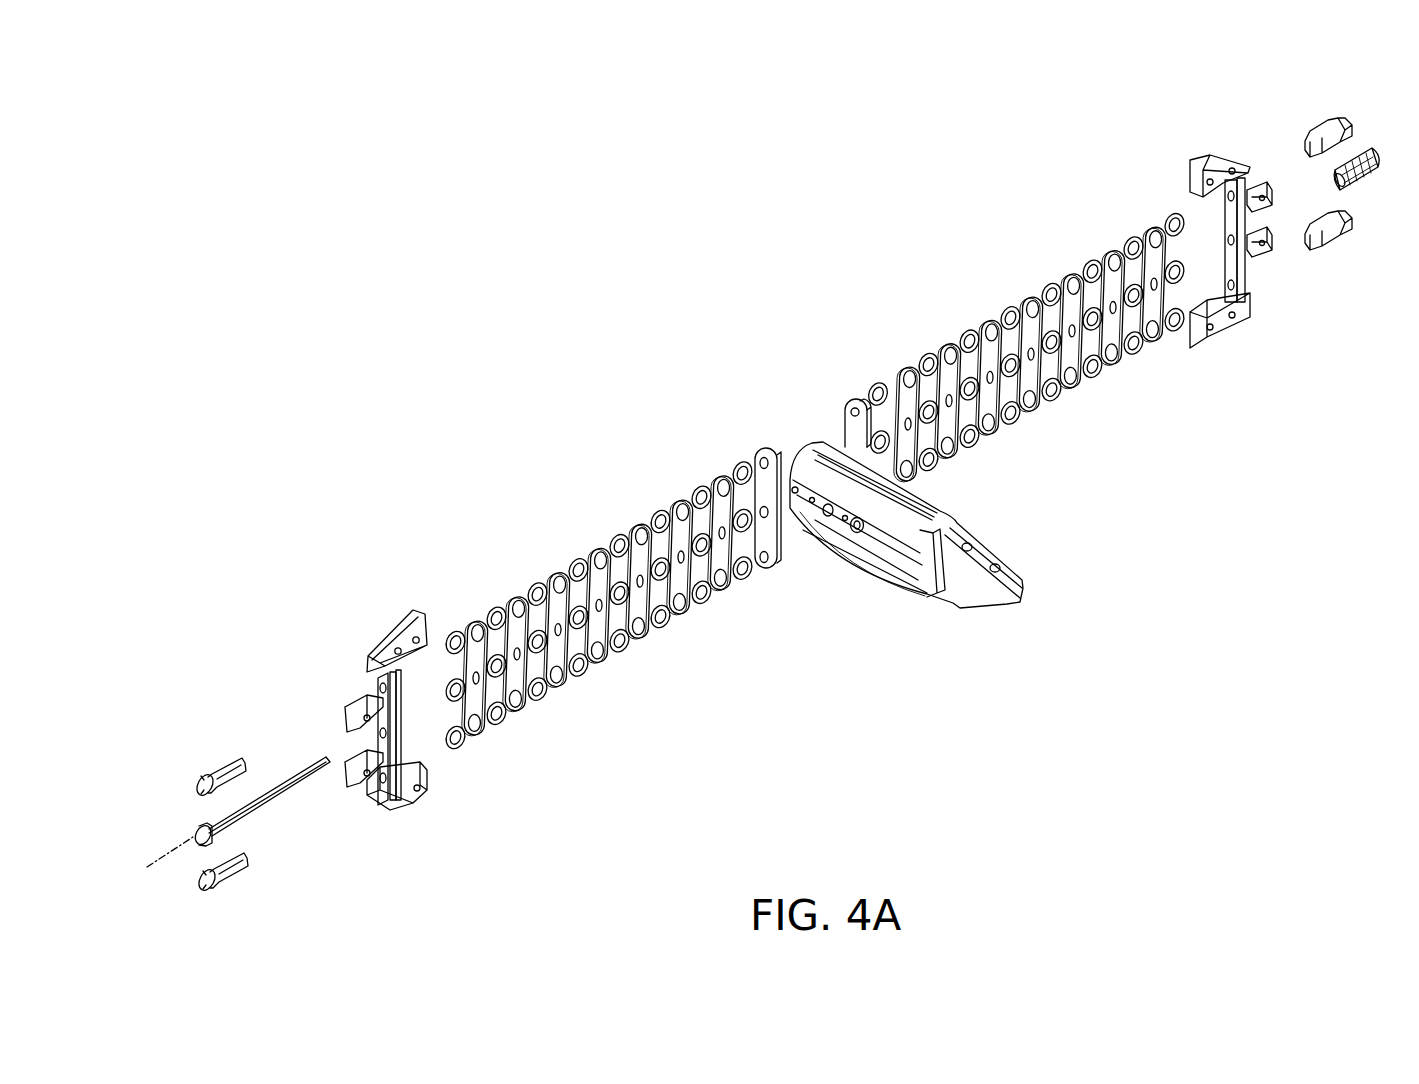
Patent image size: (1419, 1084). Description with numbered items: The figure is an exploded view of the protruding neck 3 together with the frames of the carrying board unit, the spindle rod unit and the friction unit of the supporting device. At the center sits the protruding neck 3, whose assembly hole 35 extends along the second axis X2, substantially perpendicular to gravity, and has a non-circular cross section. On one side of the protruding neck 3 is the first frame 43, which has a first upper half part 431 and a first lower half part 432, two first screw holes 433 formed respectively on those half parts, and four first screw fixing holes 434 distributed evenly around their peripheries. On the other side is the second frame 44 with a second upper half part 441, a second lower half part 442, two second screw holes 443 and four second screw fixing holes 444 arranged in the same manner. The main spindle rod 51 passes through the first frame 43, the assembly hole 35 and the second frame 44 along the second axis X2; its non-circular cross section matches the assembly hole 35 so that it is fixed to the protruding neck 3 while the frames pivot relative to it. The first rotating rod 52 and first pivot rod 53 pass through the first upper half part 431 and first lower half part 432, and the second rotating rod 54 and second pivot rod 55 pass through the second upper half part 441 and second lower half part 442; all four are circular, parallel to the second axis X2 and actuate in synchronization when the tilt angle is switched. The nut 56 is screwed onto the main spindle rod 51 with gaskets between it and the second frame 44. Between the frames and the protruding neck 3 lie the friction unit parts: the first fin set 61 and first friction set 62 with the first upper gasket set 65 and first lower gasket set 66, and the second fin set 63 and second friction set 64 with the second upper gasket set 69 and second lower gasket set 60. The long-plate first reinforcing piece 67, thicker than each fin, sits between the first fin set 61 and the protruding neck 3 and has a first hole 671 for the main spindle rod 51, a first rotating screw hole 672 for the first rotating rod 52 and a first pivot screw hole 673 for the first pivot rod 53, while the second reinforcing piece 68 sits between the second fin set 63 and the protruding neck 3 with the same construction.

The protruding neck 3 is at (937, 529).
The assembly hole 35 is at (805, 528).
The first frame 43 is at (379, 735).
The first upper half part 431 is at (422, 617).
The first lower half part 432 is at (400, 818).
The first screw holes 433 is at (395, 666).
The first screw fixing holes 434 is at (385, 806).
The second frame 44 is at (1231, 265).
The second upper half part 441 is at (1241, 205).
The second lower half part 442 is at (1210, 352).
The second screw holes 443 is at (1232, 168).
The second screw fixing holes 444 is at (1240, 312).
The main spindle rod 51 is at (197, 828).
The first rotating rod 52 is at (220, 770).
The first pivot rod 53 is at (228, 871).
The second rotating rod 54 is at (1322, 135).
The second pivot rod 55 is at (1325, 237).
The nut 56 is at (1368, 177).
The second lower gasket set 60 is at (1026, 326).
The first fin set 61 is at (593, 545).
The first friction set 62 is at (573, 603).
The second fin set 63 is at (1105, 243).
The second friction set 64 is at (1080, 308).
The first upper gasket set 65 is at (732, 462).
The first lower gasket set 66 is at (746, 588).
The first reinforcing piece 67 is at (780, 482).
The first hole 671 is at (766, 518).
The first rotating screw hole 672 is at (760, 457).
The first pivot screw hole 673 is at (766, 563).
The second reinforcing piece 68 is at (848, 425).
The second upper gasket set 69 is at (923, 352).
The second axis X2 is at (150, 865).